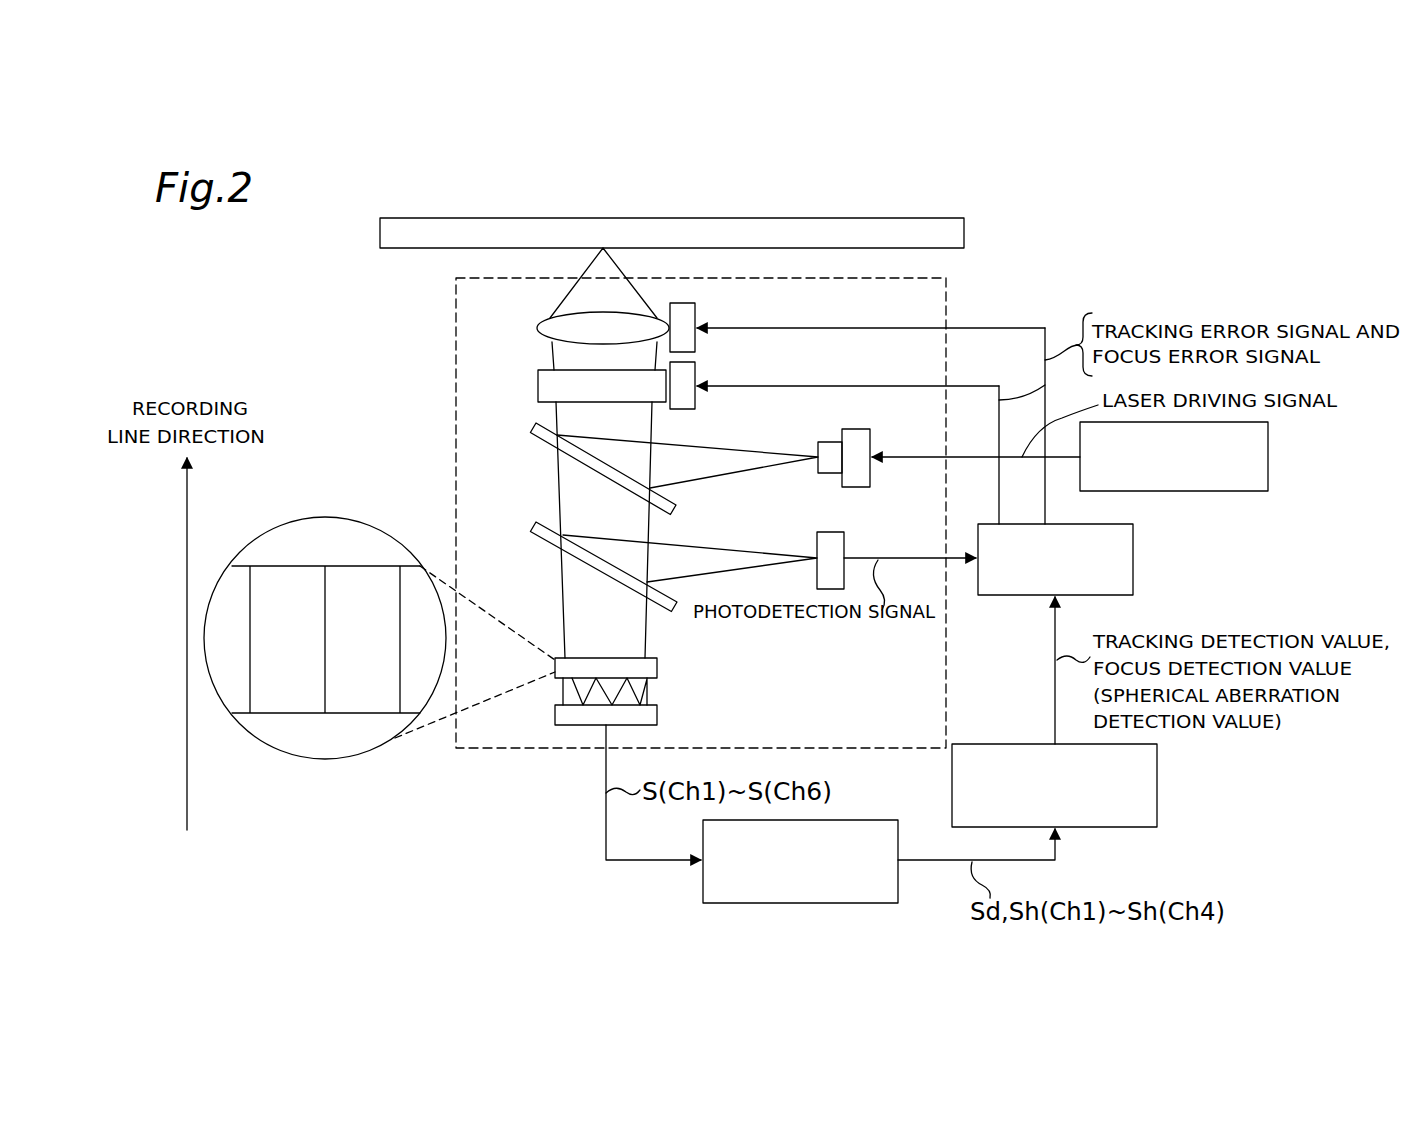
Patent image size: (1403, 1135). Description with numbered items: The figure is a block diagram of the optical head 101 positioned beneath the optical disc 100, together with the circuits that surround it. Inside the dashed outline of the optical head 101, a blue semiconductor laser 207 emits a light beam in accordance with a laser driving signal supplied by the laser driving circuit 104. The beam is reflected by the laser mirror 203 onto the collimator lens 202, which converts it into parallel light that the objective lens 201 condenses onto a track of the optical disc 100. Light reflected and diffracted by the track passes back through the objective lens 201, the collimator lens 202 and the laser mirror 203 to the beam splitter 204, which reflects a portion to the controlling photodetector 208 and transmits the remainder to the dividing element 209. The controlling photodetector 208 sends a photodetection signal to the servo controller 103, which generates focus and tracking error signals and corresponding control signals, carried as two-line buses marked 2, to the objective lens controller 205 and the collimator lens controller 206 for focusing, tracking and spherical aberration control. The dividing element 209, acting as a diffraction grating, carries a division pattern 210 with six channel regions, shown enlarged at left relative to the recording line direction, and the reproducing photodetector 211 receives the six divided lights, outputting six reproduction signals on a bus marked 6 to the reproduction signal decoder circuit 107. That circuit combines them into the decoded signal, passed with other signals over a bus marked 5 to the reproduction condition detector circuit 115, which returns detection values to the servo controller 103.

The optical disc 100 is at (918, 218).
The optical head 101 is at (946, 283).
The objective lens 201 is at (537, 326).
The collimator lens 202 is at (540, 373).
The laser mirror 203 is at (538, 445).
The beam splitter 204 is at (538, 541).
The objective lens controller 205 is at (697, 305).
The collimator lens controller 206 is at (697, 365).
The blue semiconductor laser 207 is at (855, 429).
The controlling photodetector 208 is at (830, 532).
The dividing element 209 is at (658, 663).
The division pattern 210 is at (365, 521).
The reproducing photodetector 211 is at (658, 711).
The servo controller 103 is at (1110, 595).
The laser driving circuit 104 is at (1180, 491).
The reproduction signal decoder circuit 107 is at (850, 903).
The reproduction condition detector circuit 115 is at (1110, 827).
The bus width indicator 2 is at (991, 502).
The bus width indicator 5 is at (920, 870).
The bus width indicator 6 is at (599, 752).